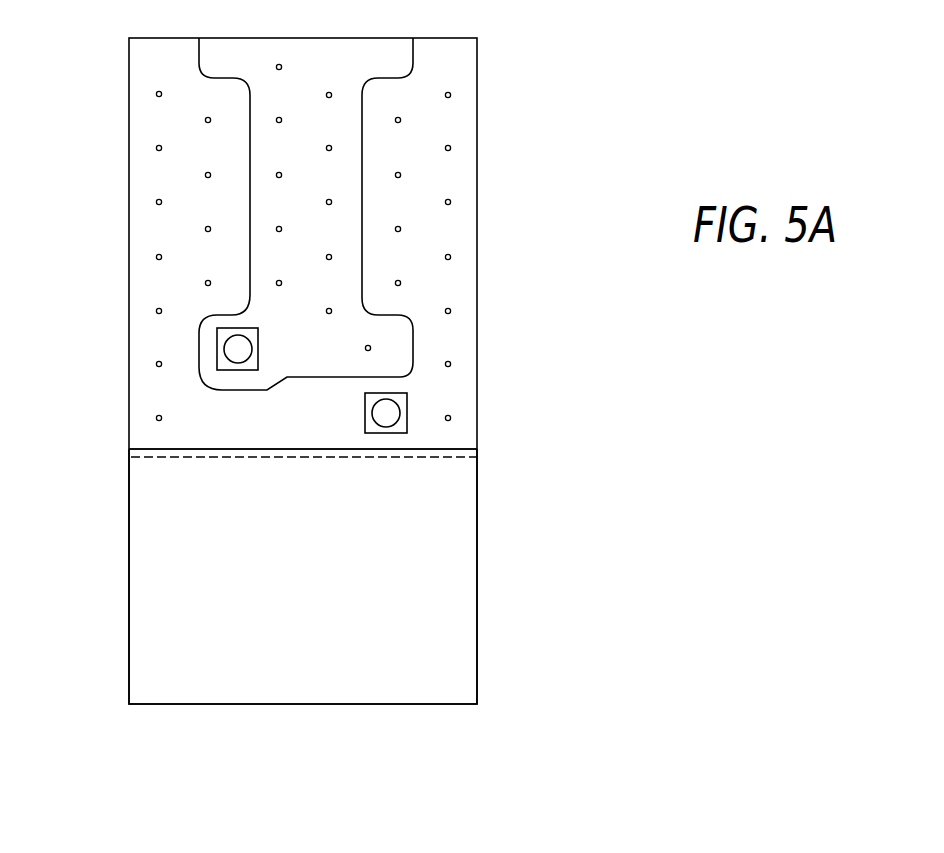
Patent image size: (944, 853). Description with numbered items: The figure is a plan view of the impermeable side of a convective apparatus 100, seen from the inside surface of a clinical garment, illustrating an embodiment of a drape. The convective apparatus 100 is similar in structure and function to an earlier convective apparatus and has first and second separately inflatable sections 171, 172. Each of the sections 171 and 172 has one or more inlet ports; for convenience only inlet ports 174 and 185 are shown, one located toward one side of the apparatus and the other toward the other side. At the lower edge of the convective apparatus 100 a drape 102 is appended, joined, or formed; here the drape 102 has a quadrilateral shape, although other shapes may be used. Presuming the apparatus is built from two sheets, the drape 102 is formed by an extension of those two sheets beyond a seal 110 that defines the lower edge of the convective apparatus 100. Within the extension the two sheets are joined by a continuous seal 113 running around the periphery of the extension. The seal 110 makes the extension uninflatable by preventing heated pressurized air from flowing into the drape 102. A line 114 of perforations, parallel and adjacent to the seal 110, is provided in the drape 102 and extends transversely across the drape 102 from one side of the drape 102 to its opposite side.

The convective apparatus 100 is at (443, 38).
The drape 102 is at (455, 532).
The seal 110 is at (212, 449).
The continuous seal 113 is at (128, 592).
The line of perforations 114 is at (198, 457).
The first separately inflatable section 171 is at (263, 103).
The second separately inflatable section 172 is at (445, 120).
The inlet port 174 is at (217, 348).
The inlet port 185 is at (407, 413).